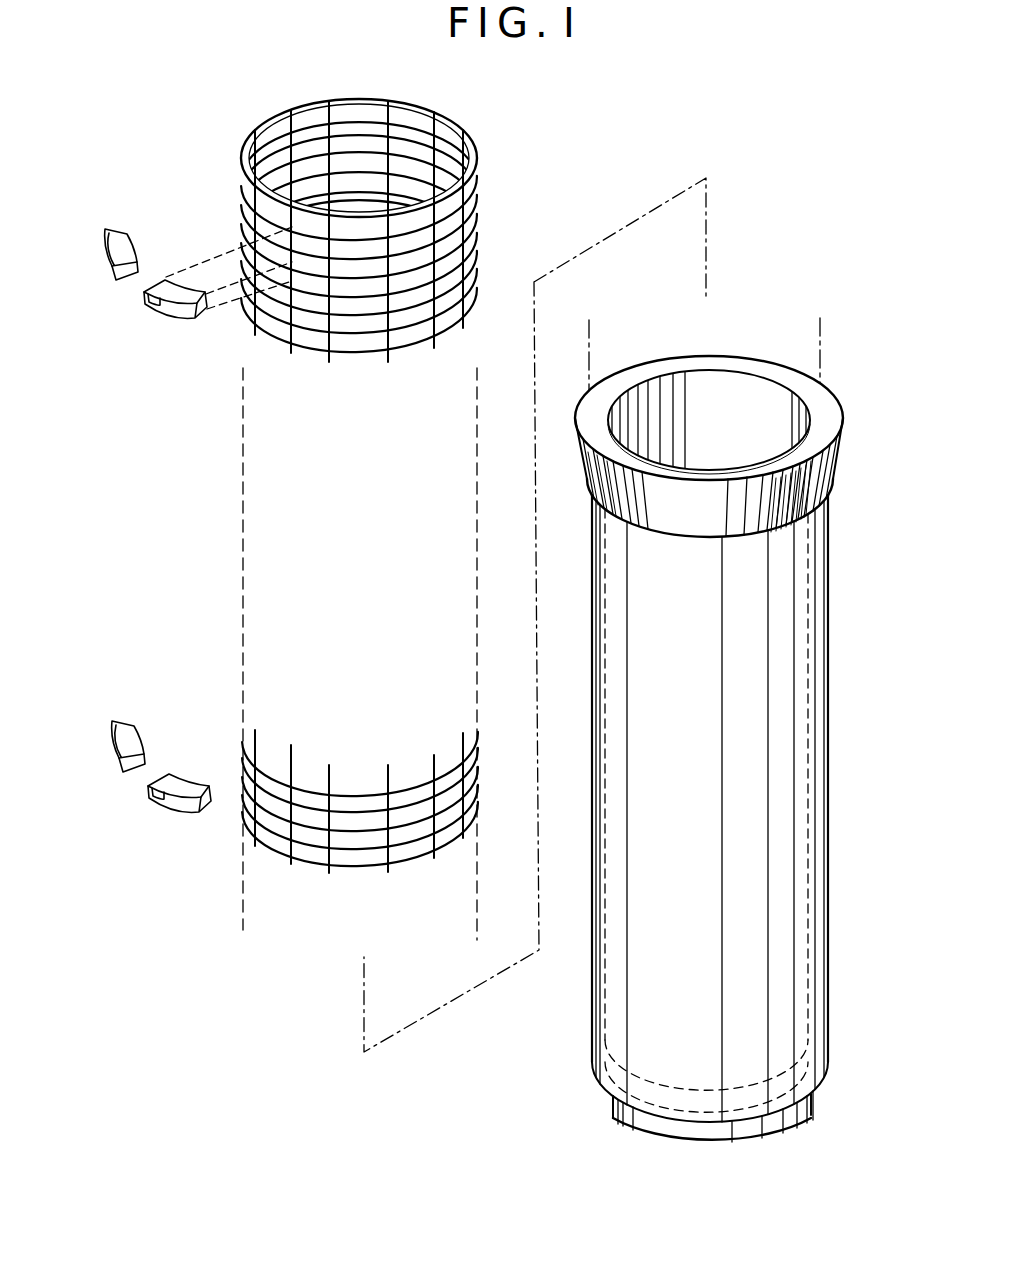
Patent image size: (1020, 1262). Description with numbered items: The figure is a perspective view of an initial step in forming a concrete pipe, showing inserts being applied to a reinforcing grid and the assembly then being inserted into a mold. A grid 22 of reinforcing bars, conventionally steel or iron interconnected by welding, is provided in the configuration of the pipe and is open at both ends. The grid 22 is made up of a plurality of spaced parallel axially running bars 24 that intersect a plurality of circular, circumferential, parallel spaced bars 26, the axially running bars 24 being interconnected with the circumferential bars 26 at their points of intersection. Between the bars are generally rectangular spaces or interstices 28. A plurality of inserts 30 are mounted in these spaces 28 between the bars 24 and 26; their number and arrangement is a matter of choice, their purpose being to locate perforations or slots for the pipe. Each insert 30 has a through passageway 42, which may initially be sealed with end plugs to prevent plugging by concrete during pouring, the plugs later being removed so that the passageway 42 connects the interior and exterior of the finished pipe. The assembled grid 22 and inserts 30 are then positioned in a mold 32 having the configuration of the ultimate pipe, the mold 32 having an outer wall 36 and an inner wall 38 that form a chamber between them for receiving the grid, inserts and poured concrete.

The grid 22 is at (486, 168).
The axially running bars 24 is at (434, 246).
The circumferential bars 26 is at (434, 288).
The spaces 28 is at (405, 104).
The inserts 30 is at (136, 226).
The mold 32 is at (585, 697).
The outer wall 36 is at (630, 368).
The inner wall 38 is at (706, 369).
The through passageway 42 is at (178, 316).